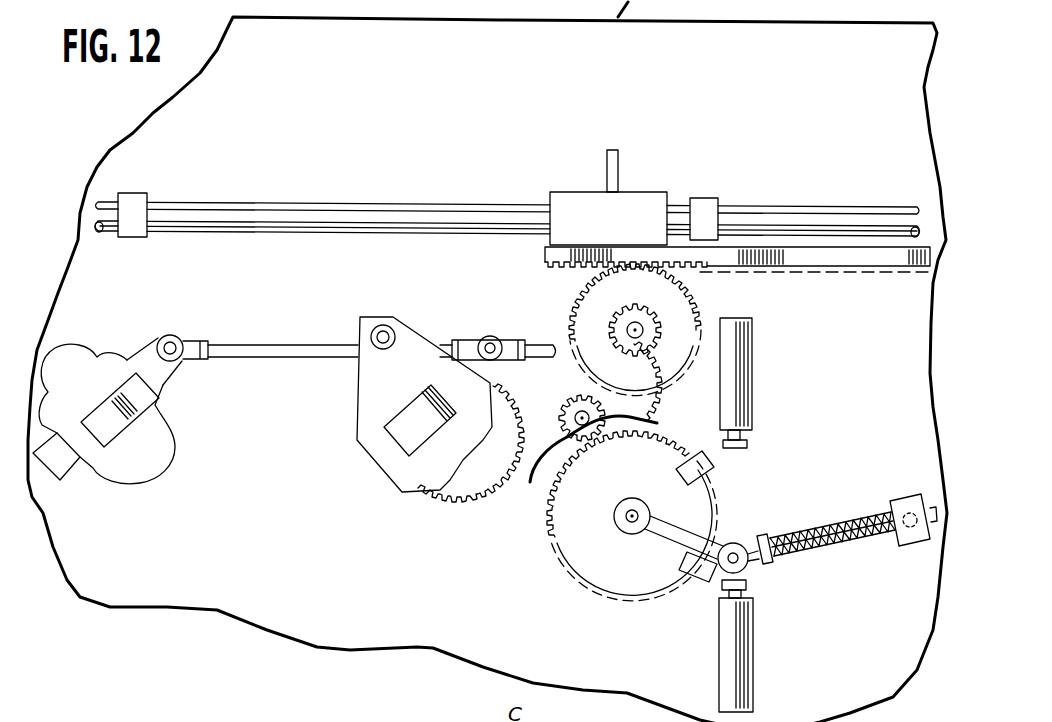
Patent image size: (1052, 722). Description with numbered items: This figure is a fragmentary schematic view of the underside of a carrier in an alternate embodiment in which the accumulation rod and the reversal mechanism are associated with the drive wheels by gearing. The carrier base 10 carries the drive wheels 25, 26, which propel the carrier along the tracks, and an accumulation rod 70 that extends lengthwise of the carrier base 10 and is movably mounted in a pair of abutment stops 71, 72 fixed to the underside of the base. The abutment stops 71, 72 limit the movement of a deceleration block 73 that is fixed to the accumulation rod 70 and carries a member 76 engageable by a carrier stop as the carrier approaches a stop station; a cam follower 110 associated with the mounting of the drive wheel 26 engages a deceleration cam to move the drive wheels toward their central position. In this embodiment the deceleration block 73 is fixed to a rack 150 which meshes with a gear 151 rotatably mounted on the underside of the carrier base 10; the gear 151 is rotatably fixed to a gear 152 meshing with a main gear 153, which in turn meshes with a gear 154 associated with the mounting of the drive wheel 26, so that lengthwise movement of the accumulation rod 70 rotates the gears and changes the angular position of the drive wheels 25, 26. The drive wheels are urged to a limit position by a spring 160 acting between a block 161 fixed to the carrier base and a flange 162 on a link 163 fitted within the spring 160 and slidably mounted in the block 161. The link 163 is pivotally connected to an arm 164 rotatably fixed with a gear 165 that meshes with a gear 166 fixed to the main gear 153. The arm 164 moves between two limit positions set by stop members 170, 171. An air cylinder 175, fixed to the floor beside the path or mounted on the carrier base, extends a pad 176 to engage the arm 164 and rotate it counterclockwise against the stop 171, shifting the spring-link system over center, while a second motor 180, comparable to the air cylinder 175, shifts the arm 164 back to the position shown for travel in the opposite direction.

The carrier base 10 is at (339, 601).
The drive wheel 25 is at (96, 487).
The drive wheel 26 is at (400, 443).
The accumulation rod 70 is at (402, 212).
The abutment stop 71 is at (705, 205).
The abutment stop 72 is at (135, 205).
The deceleration block 73 is at (637, 203).
The member 76 is at (614, 164).
The cam follower 110 is at (384, 335).
The rack 150 is at (797, 262).
The gear 151 is at (562, 298).
The gear 152 is at (658, 328).
The main gear 153 is at (648, 417).
The gear 154 is at (483, 481).
The spring 160 is at (810, 523).
The block 161 is at (906, 536).
The flange 162 is at (763, 537).
The link 163 is at (757, 563).
The arm 164 is at (710, 541).
The gear 165 is at (600, 572).
The gear 166 is at (578, 427).
The stop member 170 is at (693, 576).
The stop member 171 is at (712, 461).
The air cylinder 175 is at (743, 683).
The pad 176 is at (747, 588).
The second motor 180 is at (755, 389).